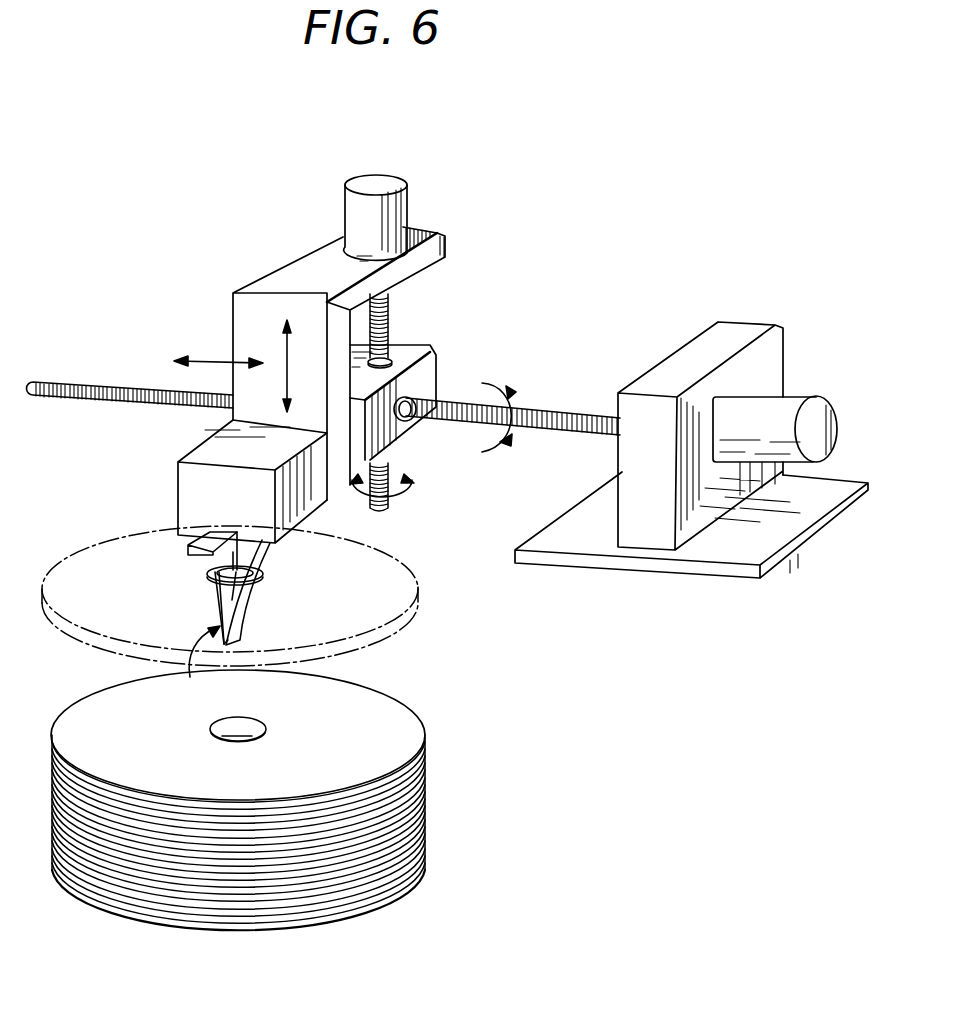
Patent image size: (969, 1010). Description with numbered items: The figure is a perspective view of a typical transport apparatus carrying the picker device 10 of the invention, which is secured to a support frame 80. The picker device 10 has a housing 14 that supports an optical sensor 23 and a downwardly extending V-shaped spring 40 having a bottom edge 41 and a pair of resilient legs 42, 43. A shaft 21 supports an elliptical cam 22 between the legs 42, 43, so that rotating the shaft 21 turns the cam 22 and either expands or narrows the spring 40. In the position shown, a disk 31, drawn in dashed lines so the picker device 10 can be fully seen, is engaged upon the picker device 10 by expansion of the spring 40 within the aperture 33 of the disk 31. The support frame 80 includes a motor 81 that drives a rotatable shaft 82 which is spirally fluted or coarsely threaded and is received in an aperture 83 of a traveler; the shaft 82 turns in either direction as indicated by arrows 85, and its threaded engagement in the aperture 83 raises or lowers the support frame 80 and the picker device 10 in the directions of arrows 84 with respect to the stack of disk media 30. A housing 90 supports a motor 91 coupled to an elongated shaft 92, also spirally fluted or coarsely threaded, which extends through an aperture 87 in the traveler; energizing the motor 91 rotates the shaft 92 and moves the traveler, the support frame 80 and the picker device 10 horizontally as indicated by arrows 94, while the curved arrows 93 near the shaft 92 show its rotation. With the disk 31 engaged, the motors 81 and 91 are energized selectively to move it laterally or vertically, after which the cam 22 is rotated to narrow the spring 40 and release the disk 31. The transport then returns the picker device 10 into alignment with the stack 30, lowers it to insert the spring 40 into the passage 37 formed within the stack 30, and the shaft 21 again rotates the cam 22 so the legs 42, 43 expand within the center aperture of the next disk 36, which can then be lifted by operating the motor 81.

The picker device 10 is at (177, 500).
The housing 14 is at (197, 477).
The shaft 21 is at (255, 542).
The elliptical cam 22 is at (207, 575).
The optical sensor 23 is at (212, 527).
The stack of disk media 30 is at (436, 807).
The disk 31 is at (95, 636).
The aperture 33 is at (263, 575).
The disk 36 is at (362, 743).
The passage 37 is at (249, 729).
The V-shaped spring 40 is at (193, 667).
The bottom edge 41 is at (230, 645).
The leg 42 is at (242, 600).
The leg 43 is at (214, 598).
The support frame 80 is at (250, 318).
The motor 81 is at (378, 183).
The rotatable shaft 82 is at (390, 317).
The aperture 83 is at (402, 355).
The arrows 84 is at (283, 364).
The arrows 85 is at (417, 483).
The aperture 87 is at (405, 397).
The housing 90 is at (722, 335).
The motor 91 is at (785, 408).
The elongated shaft 92 is at (580, 432).
The lead screw rotation 93 is at (490, 446).
The arrows 94 is at (220, 360).